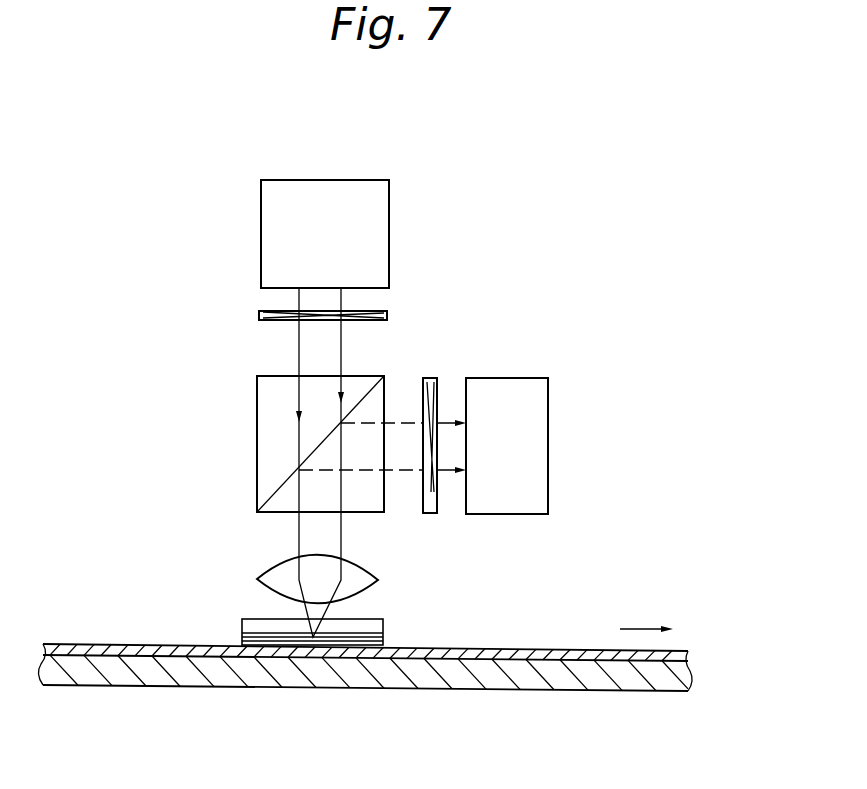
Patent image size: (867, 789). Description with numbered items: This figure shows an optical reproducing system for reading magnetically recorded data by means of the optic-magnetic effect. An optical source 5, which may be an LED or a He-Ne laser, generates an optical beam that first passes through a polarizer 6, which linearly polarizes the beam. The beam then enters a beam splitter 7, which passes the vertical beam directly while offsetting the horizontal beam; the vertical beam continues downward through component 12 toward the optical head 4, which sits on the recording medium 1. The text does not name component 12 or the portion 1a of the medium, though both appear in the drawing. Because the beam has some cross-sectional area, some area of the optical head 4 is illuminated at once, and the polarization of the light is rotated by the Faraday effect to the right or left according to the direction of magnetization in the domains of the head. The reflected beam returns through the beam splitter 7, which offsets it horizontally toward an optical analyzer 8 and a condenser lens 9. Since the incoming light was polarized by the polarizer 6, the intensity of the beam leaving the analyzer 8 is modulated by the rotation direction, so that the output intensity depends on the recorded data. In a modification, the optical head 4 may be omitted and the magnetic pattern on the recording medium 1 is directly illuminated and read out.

The recording medium 1 is at (577, 683).
The surface layer of substrate 1a is at (577, 652).
The optical head 4 is at (400, 632).
The optical source 5 is at (383, 250).
The polarizer 6 is at (387, 317).
The beam splitter 7 is at (262, 432).
The optical analyzer 8 is at (432, 378).
The condenser lens 9 is at (532, 388).
The objective lens 12 is at (272, 582).